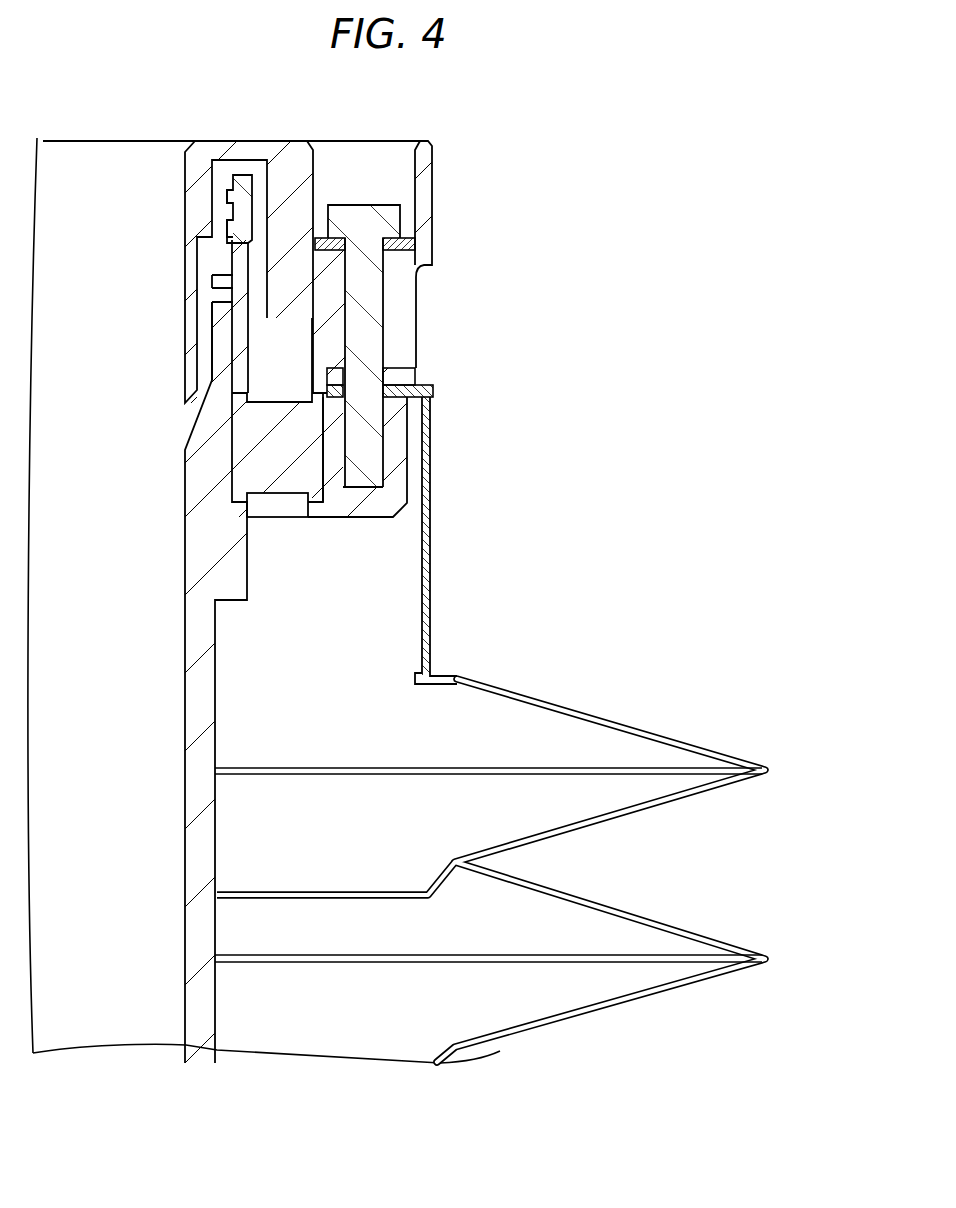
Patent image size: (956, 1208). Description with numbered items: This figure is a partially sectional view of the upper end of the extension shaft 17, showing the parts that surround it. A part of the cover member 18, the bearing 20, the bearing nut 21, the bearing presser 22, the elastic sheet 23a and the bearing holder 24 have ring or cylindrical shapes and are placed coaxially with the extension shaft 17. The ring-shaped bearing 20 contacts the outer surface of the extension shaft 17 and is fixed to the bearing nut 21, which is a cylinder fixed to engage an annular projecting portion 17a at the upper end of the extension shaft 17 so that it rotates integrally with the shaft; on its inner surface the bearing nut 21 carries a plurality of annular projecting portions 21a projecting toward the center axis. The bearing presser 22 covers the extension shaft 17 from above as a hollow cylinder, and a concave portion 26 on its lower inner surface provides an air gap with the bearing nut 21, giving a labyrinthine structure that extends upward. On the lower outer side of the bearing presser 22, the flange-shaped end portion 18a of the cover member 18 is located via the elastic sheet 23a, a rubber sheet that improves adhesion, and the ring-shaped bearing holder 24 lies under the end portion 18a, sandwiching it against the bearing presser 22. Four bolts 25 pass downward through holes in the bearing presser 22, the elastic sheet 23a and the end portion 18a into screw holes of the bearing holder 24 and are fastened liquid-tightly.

The extension shaft 17 is at (197, 913).
The annular projecting portion 17a is at (223, 328).
The cover member 18 is at (552, 697).
The end portion of the cover member 18a is at (433, 388).
The bearing 20 is at (290, 495).
The bearing nut 21 is at (243, 178).
The projecting portions 21a is at (230, 220).
The bearing presser 22 is at (427, 202).
The elastic sheet 23a is at (407, 372).
The bearing holder 24 is at (400, 452).
The bolts 25 is at (370, 300).
The concave portion 26 is at (203, 266).